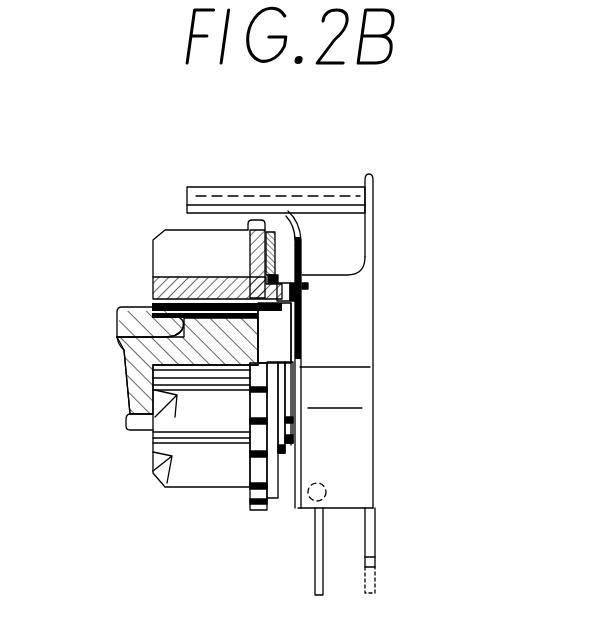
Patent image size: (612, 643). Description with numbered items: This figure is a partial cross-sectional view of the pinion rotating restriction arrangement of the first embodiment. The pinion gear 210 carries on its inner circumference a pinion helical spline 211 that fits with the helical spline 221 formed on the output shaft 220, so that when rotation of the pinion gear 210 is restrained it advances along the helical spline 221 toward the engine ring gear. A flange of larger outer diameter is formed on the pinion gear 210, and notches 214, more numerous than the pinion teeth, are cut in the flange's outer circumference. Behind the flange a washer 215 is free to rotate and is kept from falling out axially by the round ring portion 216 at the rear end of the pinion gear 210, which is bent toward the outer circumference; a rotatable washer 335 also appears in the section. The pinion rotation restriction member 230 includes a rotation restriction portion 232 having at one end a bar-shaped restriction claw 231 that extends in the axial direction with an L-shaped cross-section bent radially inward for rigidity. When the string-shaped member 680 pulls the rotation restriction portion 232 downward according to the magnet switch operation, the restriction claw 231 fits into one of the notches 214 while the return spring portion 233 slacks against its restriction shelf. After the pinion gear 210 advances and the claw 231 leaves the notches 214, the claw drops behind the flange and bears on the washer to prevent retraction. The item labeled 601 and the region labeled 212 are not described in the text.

The pinion gear 210 is at (213, 472).
The pinion helical spline 211 is at (118, 340).
The flange block 212 is at (153, 253).
The notches 214 is at (261, 219).
The washer 215 is at (269, 233).
The round ring portion 216 is at (305, 232).
The output shaft 220 is at (124, 393).
The helical spline 221 is at (118, 306).
The pinion rotation restriction member 230 is at (395, 316).
The restriction claw 231 is at (211, 187).
The rotation restriction portion 232 is at (353, 445).
The return spring portion 233 is at (372, 540).
The rotatable washer 335 is at (305, 289).
The hole 601 is at (313, 499).
The string-shaped member 680 is at (312, 568).